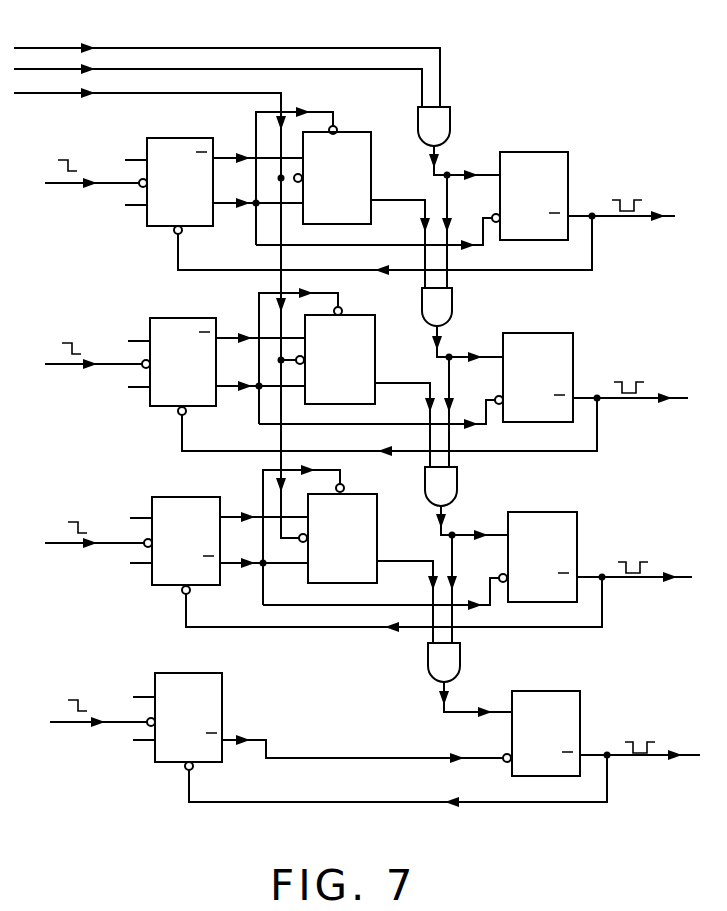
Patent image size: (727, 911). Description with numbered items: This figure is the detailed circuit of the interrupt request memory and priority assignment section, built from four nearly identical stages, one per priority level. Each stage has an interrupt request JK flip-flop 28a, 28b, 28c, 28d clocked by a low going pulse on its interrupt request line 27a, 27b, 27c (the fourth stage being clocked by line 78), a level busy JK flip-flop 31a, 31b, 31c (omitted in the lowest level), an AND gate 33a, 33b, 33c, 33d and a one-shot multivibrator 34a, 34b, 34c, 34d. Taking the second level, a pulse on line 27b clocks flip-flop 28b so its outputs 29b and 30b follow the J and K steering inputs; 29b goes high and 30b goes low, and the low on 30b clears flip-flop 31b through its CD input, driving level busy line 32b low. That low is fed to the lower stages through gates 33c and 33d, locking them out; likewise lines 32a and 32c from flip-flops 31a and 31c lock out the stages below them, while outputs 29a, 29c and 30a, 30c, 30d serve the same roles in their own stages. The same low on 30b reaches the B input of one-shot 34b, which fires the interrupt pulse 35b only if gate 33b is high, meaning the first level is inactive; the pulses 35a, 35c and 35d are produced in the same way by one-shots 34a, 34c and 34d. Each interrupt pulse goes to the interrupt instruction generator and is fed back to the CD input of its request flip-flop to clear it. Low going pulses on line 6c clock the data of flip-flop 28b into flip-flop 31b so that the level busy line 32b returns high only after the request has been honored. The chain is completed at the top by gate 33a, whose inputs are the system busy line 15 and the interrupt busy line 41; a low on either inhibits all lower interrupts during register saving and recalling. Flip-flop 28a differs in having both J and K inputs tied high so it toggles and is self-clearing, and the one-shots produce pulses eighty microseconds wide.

The system busy signal line 15 is at (162, 48).
The interrupt busy signal line 41 is at (216, 67).
The level busy clear pulse line 6c is at (62, 94).
The first level interrupt request line 27a is at (70, 186).
The second level interrupt request line 27b is at (68, 368).
The third level interrupt request line 27c is at (72, 546).
The clock input 78 is at (74, 724).
The first level interrupt request flip-flop 28a is at (186, 138).
The second level interrupt request flip-flop 28b is at (194, 318).
The third level interrupt request flip-flop 28c is at (194, 497).
The fourth level interrupt request flip-flop 28d is at (224, 672).
The first level flip-flop output 29a is at (258, 150).
The second level flip-flop output 29b is at (260, 330).
The third level flip-flop output 29c is at (264, 509).
The first level flip-flop output line 30a is at (488, 218).
The second level flip-flop output line 30b is at (491, 400).
The third level flip-flop output line 30c is at (495, 578).
The fourth level flip-flop output line 30d is at (250, 738).
The first level busy flip-flop 31a is at (386, 152).
The second level busy flip-flop 31b is at (390, 337).
The third level busy flip-flop 31c is at (394, 516).
The first level busy line 32a is at (382, 198).
The second level busy line 32b is at (382, 382).
The third level busy line 32c is at (407, 602).
The first level AND gate 33a is at (450, 128).
The second level AND gate 33b is at (452, 304).
The third level AND gate 33c is at (457, 478).
The fourth level AND gate 33d is at (460, 656).
The first level one-shot multivibrator 34a is at (536, 152).
The second level one-shot multivibrator 34b is at (540, 332).
The third level one-shot multivibrator 34c is at (546, 512).
The fourth level one-shot multivibrator 34d is at (554, 691).
The first level interrupt pulse 35a is at (640, 220).
The second level interrupt pulse 35b is at (640, 402).
The third level interrupt pulse 35c is at (650, 580).
The fourth level interrupt pulse 35d is at (654, 760).